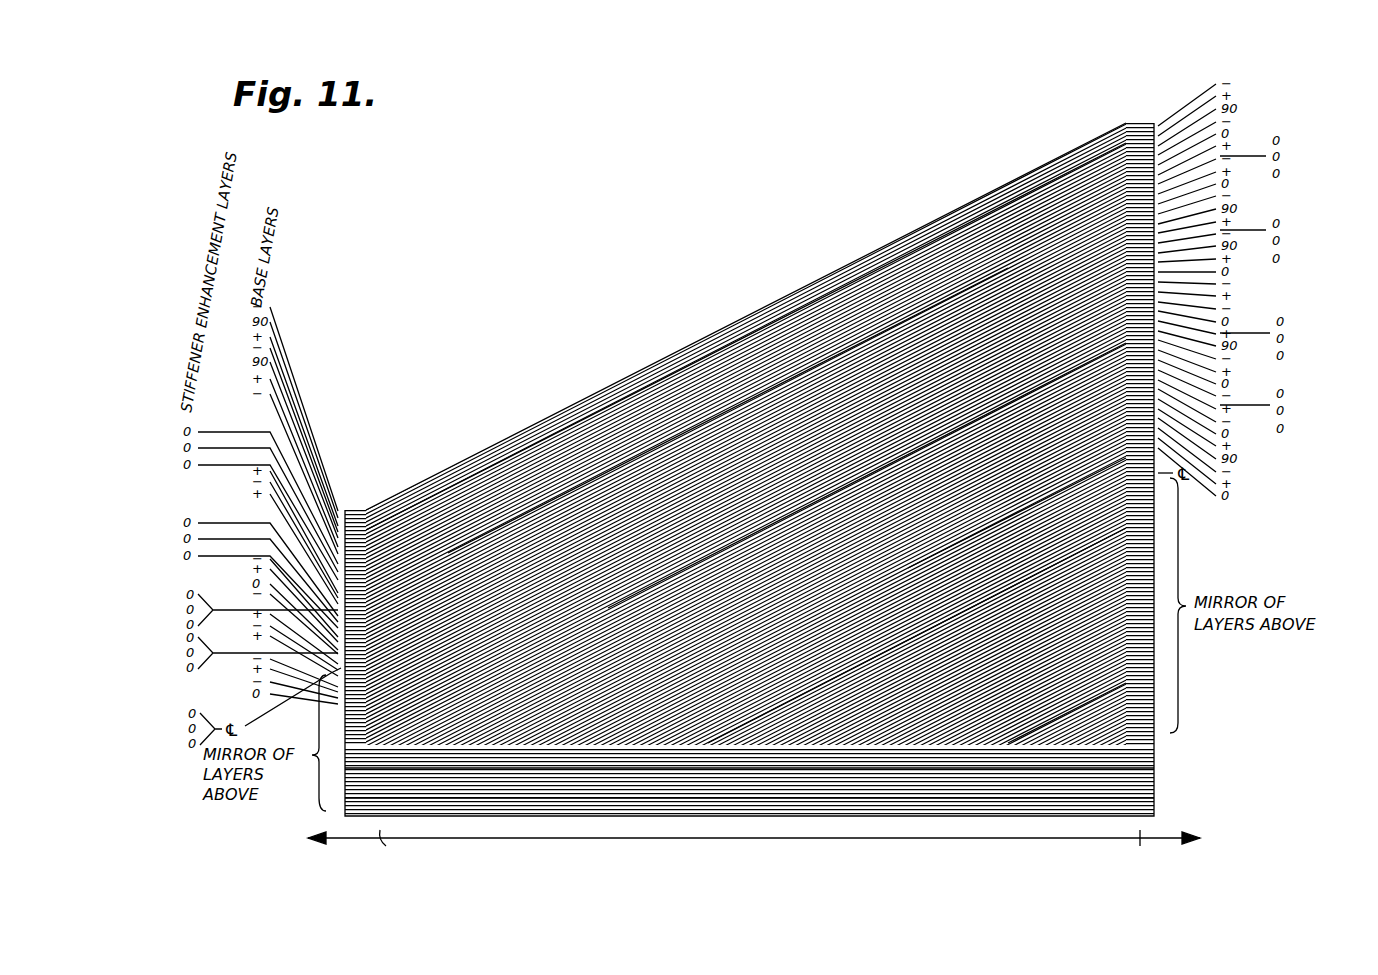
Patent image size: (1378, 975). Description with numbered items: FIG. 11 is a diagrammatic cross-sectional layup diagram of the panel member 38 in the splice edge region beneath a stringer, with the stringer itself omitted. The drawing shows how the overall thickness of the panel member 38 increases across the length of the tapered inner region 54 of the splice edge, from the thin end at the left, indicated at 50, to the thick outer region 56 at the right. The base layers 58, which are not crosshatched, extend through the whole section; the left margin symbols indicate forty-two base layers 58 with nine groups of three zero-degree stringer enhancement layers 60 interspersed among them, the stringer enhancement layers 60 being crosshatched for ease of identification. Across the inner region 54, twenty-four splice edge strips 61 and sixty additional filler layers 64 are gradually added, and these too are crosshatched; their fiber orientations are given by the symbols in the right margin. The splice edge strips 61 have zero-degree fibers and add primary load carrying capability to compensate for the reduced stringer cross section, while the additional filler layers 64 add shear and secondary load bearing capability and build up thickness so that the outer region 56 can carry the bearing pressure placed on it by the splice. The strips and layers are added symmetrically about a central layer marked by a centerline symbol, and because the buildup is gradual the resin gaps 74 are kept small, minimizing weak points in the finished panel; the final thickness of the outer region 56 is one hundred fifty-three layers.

The panel member 38 is at (520, 405).
The first end region 50 is at (347, 832).
The inner region 54 is at (757, 830).
The outer region 56 is at (1170, 831).
The base layers 58 is at (749, 465).
The stringer enhancement layers 60 is at (749, 465).
The splice edge strips 61 is at (867, 499).
The additional filler layers 64 is at (1017, 477).
The resin gaps 74 is at (640, 470).